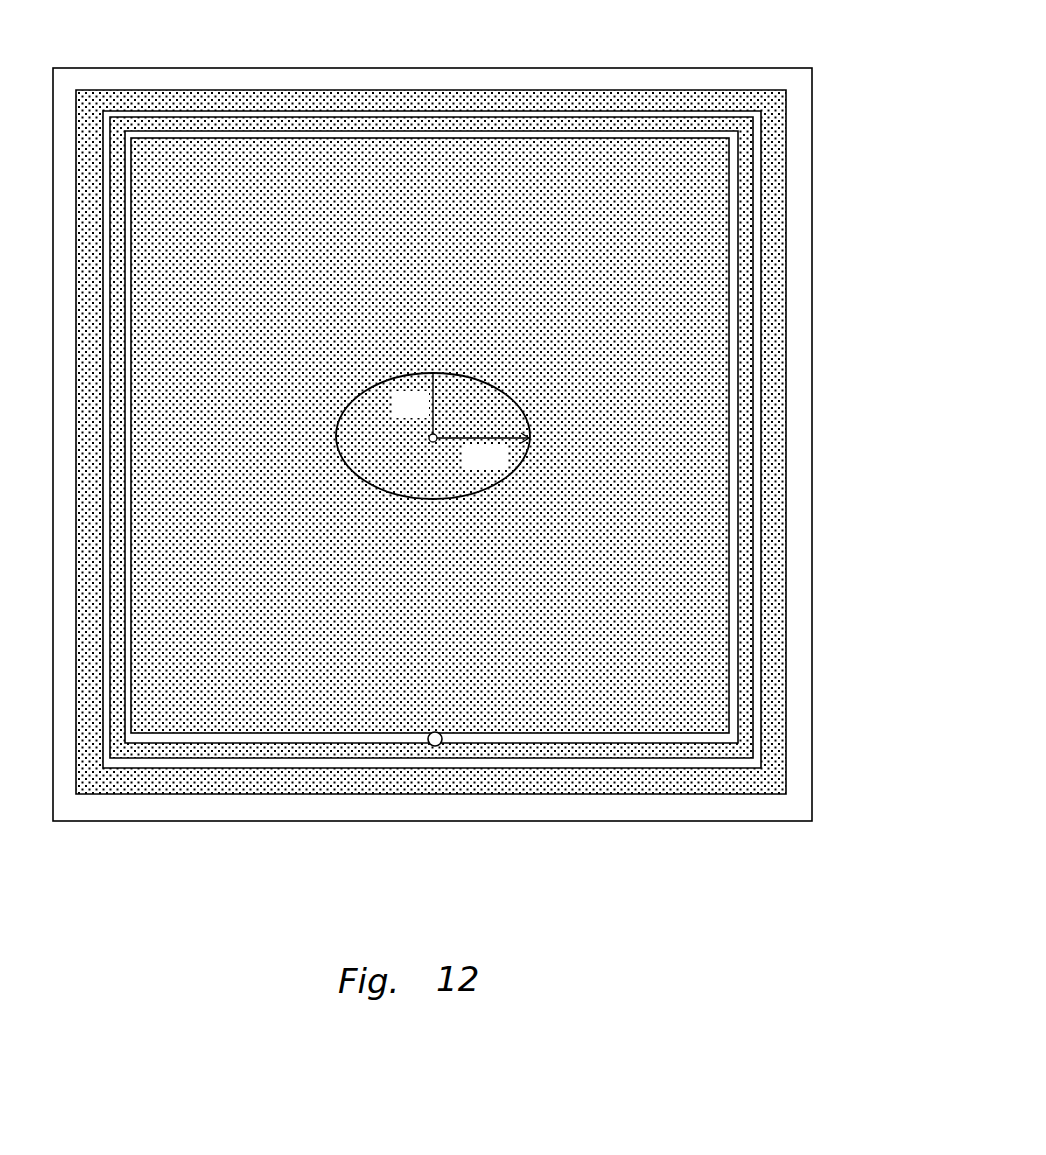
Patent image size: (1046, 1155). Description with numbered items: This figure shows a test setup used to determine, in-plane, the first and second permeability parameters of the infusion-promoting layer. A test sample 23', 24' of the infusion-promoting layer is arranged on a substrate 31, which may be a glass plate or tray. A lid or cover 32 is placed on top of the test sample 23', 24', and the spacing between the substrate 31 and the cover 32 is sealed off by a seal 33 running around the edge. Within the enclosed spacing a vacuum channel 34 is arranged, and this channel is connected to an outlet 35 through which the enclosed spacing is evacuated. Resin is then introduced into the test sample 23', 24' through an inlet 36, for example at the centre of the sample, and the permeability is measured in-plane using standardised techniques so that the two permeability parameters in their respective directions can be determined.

The substrate 31 is at (428, 70).
The test sample 23' is at (549, 435).
The test sample 24' is at (549, 435).
The cover 32 is at (549, 435).
The seal 33 is at (752, 583).
The vacuum channel 34 is at (600, 727).
The outlet 35 is at (427, 738).
The inlet 36 is at (397, 488).